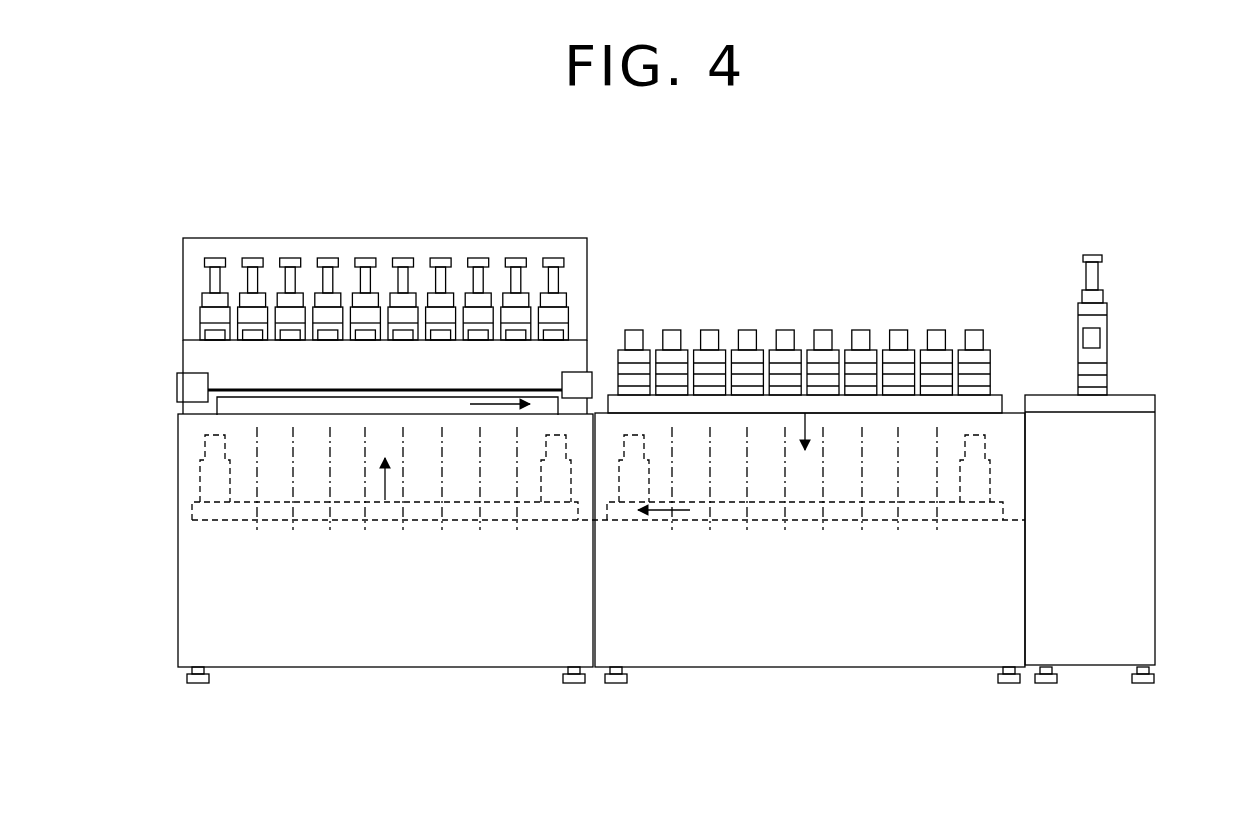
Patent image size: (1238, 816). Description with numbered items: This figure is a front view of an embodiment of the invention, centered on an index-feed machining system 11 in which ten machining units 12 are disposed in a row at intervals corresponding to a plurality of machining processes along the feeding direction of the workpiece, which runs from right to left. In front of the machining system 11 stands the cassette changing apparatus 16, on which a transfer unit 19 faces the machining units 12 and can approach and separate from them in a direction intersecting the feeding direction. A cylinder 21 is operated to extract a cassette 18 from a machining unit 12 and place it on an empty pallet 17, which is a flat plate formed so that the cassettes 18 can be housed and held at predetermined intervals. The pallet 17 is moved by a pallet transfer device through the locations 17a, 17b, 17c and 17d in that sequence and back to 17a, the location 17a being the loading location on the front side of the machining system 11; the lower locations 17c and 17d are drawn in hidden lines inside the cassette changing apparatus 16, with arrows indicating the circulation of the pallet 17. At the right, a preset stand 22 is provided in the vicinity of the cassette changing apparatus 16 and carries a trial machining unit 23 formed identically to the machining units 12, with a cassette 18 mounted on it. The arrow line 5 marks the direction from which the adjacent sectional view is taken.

The arrow line 5— 5 is at (592, 236).
The index-feed machining system 11 is at (220, 223).
The machining units 12 is at (475, 258).
The cassette changing apparatus 16 is at (457, 675).
The pallet 17 is at (237, 400).
The pallet location 17a is at (335, 373).
The pallet location 17b is at (932, 402).
The pallet location 17c is at (803, 515).
The pallet location 17d is at (310, 515).
The cassettes 18 is at (742, 337).
The transfer unit 19 is at (597, 333).
The cylinder 21 is at (187, 388).
The preset stand 22 is at (1128, 400).
The trial machining unit 23 is at (1103, 290).